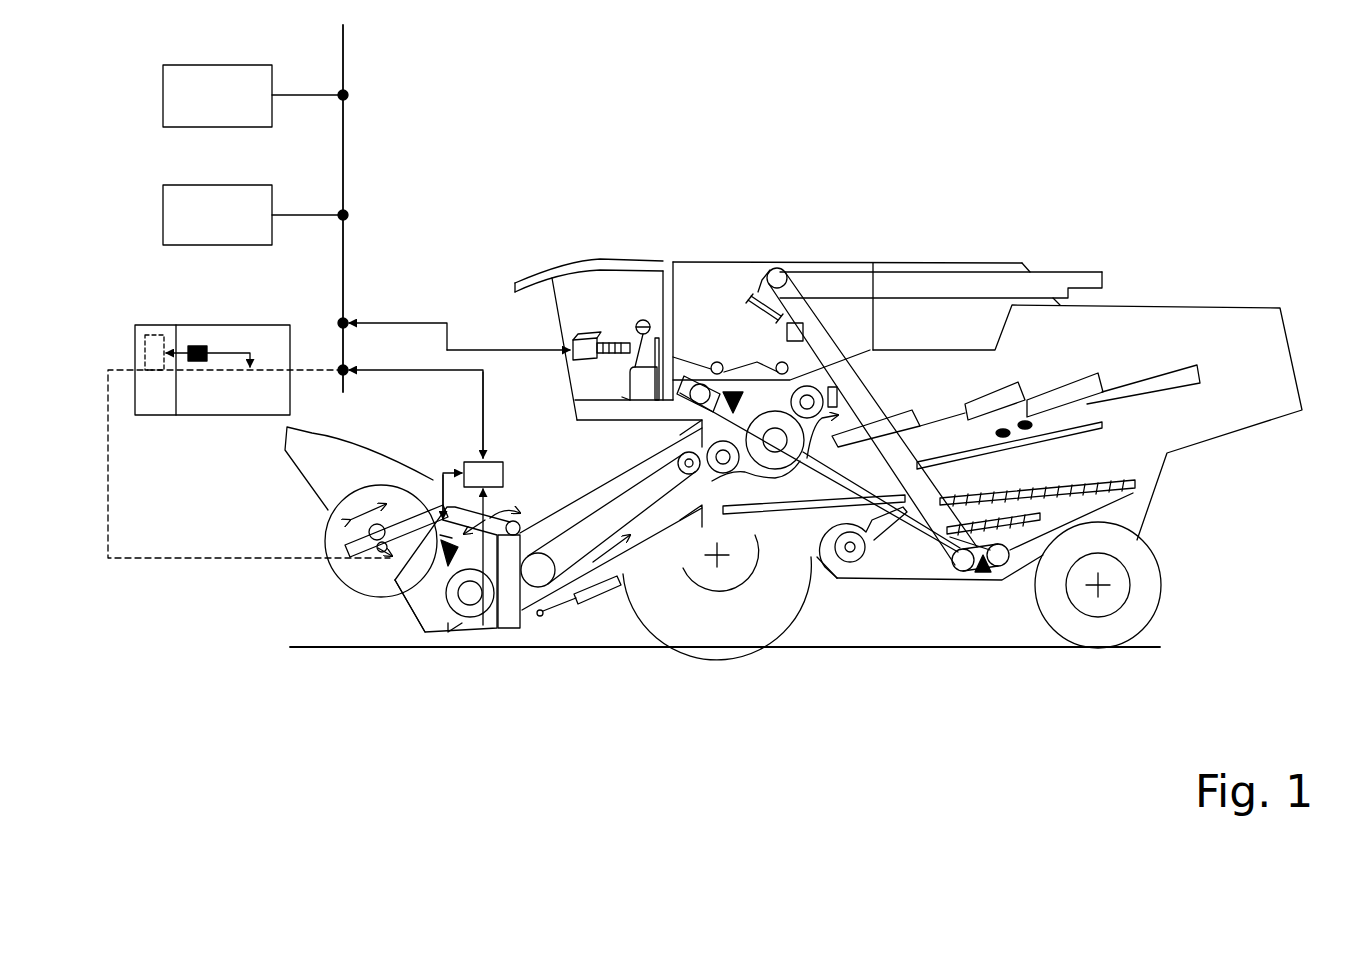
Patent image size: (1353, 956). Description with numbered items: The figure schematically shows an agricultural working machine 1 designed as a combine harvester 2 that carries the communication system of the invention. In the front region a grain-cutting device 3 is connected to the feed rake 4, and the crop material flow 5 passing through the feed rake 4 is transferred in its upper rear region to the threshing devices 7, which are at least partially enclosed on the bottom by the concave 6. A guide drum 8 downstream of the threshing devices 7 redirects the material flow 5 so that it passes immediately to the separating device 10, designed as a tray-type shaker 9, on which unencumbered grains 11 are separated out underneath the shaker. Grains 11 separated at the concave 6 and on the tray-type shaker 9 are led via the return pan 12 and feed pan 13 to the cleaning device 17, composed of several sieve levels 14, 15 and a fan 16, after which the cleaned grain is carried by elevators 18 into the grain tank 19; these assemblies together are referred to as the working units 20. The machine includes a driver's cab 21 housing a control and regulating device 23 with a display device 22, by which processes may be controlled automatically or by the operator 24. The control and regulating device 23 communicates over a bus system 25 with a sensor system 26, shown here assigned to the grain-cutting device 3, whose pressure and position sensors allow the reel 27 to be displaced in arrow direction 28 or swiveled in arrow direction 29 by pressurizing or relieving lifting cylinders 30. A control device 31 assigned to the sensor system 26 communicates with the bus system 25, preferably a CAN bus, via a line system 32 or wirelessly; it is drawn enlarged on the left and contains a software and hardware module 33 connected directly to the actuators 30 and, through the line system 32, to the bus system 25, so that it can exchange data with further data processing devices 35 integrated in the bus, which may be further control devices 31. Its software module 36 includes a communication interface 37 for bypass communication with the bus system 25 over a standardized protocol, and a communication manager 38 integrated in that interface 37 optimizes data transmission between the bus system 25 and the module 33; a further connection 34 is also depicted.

The agricultural working machine 1 is at (946, 203).
The combine harvester 2 is at (793, 425).
The grain-cutting device 3 is at (402, 551).
The feed rake 4 is at (560, 495).
The crop material flow 5 is at (611, 574).
The concave 6 is at (752, 475).
The threshing devices 7 is at (735, 390).
The guide drum 8 is at (809, 385).
The tray-type shaker 9 is at (1016, 327).
The separating device 10 is at (1010, 383).
The grains 11 is at (1035, 425).
The return pan 12 is at (1103, 423).
The feed pan 13 is at (948, 522).
The sieve level 14 is at (1137, 483).
The sieve level 15 is at (1040, 517).
The fan 16 is at (885, 550).
The cleaning device 17 is at (983, 575).
The elevators 18 is at (820, 347).
The grain tank 19 is at (874, 381).
The working units 20 is at (793, 425).
The driver's cab 21 is at (624, 283).
The display device 22 is at (574, 340).
The control and regulating device 23 is at (606, 340).
The operator 24 is at (645, 323).
The bus system 25 is at (346, 176).
The sensor system 26 is at (447, 563).
The reel 27 is at (355, 575).
The arrow direction 28 is at (368, 535).
The arrow direction 29 is at (490, 541).
The lifting cylinders 30 is at (442, 540).
The control device 31 is at (470, 467).
The line system 32 is at (316, 362).
The software and hardware module 33 is at (197, 336).
The signal connection 34 is at (188, 561).
The data processing devices 35 is at (182, 103).
The software module 36 is at (153, 331).
The communication interface 37 is at (226, 348).
The communication manager 38 is at (197, 345).